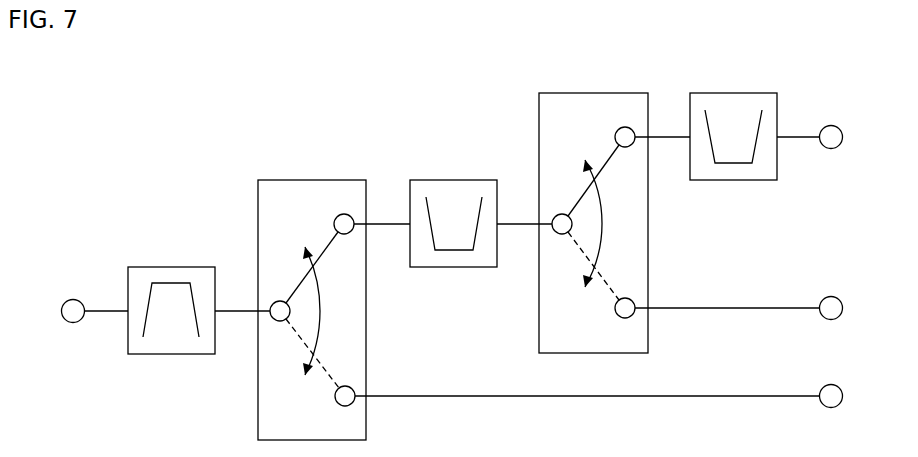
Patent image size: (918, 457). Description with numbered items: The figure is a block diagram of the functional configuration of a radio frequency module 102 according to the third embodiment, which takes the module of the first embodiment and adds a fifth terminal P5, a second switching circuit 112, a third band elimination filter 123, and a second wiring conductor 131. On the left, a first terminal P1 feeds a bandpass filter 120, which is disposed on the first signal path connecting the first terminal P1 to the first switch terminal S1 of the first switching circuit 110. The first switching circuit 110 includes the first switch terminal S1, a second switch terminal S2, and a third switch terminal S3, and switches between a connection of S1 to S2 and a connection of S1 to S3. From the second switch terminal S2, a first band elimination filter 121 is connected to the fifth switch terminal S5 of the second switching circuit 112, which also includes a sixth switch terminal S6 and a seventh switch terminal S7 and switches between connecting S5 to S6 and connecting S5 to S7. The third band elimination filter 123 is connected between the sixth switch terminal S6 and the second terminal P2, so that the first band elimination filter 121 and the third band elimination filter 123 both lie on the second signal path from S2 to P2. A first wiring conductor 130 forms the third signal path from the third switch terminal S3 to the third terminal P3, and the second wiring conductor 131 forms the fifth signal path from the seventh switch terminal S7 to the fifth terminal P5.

The radio frequency module 102 is at (235, 131).
The first switching circuit 110 is at (326, 180).
The second switching circuit 112 is at (603, 93).
The bandpass filter 120 is at (173, 267).
The first band elimination filter 121 is at (453, 180).
The third band elimination filter 123 is at (735, 93).
The first wiring conductor 130 is at (453, 396).
The second wiring conductor 131 is at (735, 308).
The first switch terminal S1 is at (277, 297).
The second switch terminal S2 is at (345, 211).
The third switch terminal S3 is at (345, 382).
The fifth switch terminal S5 is at (558, 210).
The sixth switch terminal S6 is at (625, 124).
The seventh switch terminal S7 is at (627, 295).
The first terminal P1 is at (56, 313).
The second terminal P2 is at (848, 139).
The third terminal P3 is at (848, 397).
The fifth terminal P5 is at (848, 310).